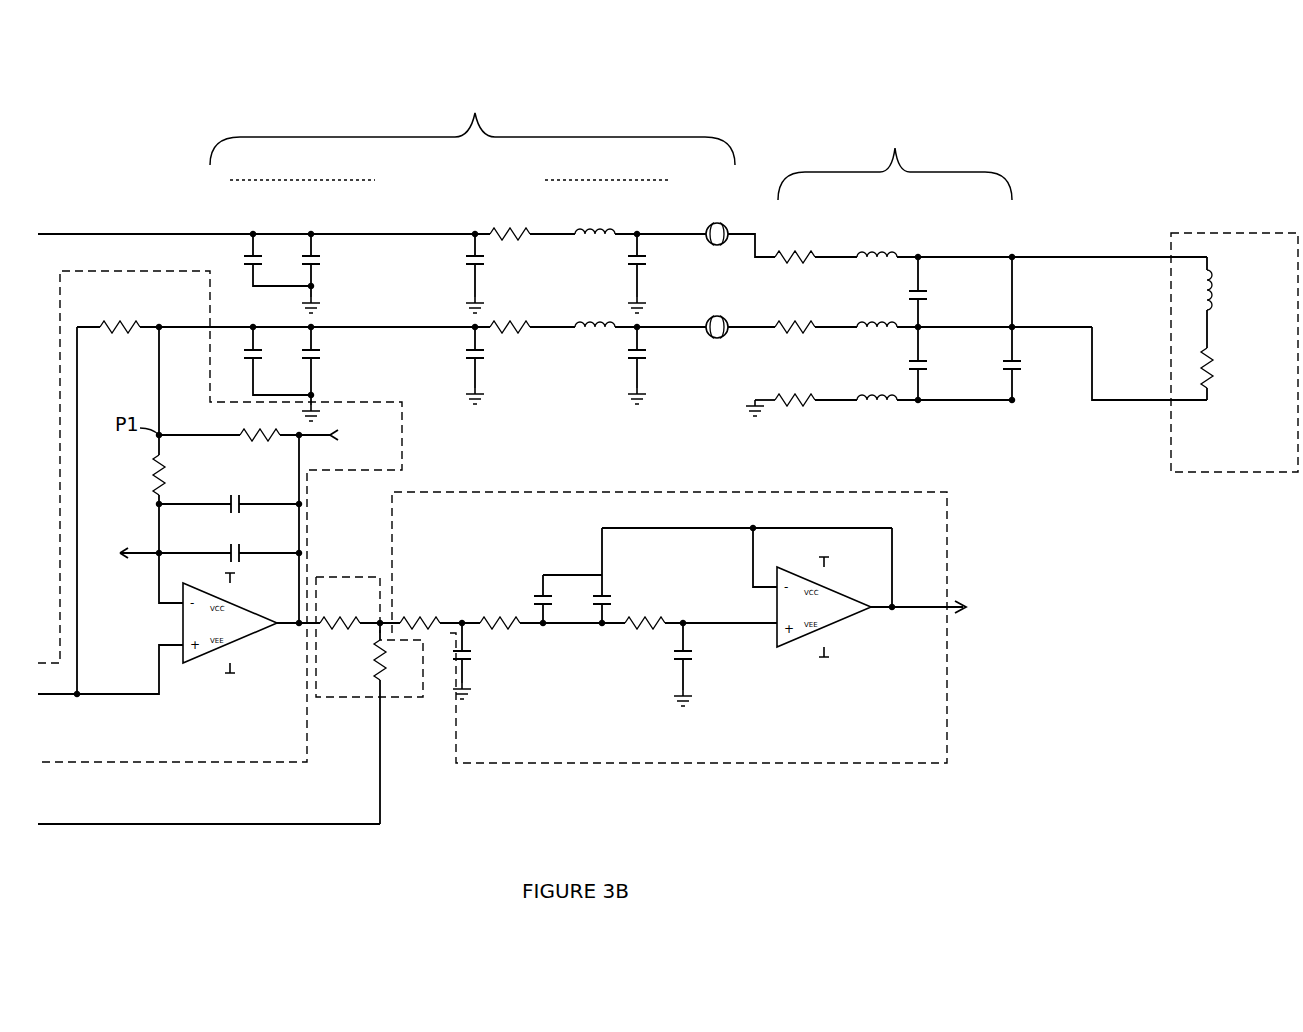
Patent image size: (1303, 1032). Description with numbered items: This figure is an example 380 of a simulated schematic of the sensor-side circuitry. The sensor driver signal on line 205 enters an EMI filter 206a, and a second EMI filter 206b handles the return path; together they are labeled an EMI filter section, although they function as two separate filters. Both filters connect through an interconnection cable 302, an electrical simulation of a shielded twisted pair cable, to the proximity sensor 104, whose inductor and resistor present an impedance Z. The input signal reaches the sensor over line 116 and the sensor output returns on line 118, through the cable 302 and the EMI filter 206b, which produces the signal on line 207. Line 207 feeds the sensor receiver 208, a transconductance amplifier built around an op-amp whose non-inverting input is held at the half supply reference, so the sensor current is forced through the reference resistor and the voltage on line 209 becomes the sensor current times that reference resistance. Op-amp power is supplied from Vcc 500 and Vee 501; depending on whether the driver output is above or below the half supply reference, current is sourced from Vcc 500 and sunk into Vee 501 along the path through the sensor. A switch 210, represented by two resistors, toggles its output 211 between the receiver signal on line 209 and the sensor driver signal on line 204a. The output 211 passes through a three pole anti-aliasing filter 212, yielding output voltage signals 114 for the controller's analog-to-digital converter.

The example 380 is at (170, 82).
The line 205 is at (117, 230).
The line 207 is at (232, 326).
The EMI filter 206a is at (479, 201).
The EMI filter 206b is at (496, 255).
The interconnection cable 302 is at (919, 294).
The line 116 is at (1098, 268).
The line 118 is at (1140, 402).
The proximity sensor 104 is at (1254, 472).
The sensor receiver 208 is at (200, 762).
The line 209 is at (304, 626).
The switch 210 is at (322, 698).
The output 211 is at (380, 623).
The sensor driver signal line 204a is at (210, 826).
The filter 212 is at (732, 764).
The output voltage signals 114 is at (967, 607).
The Vcc 500 is at (544, 571).
The Vee 501 is at (509, 665).